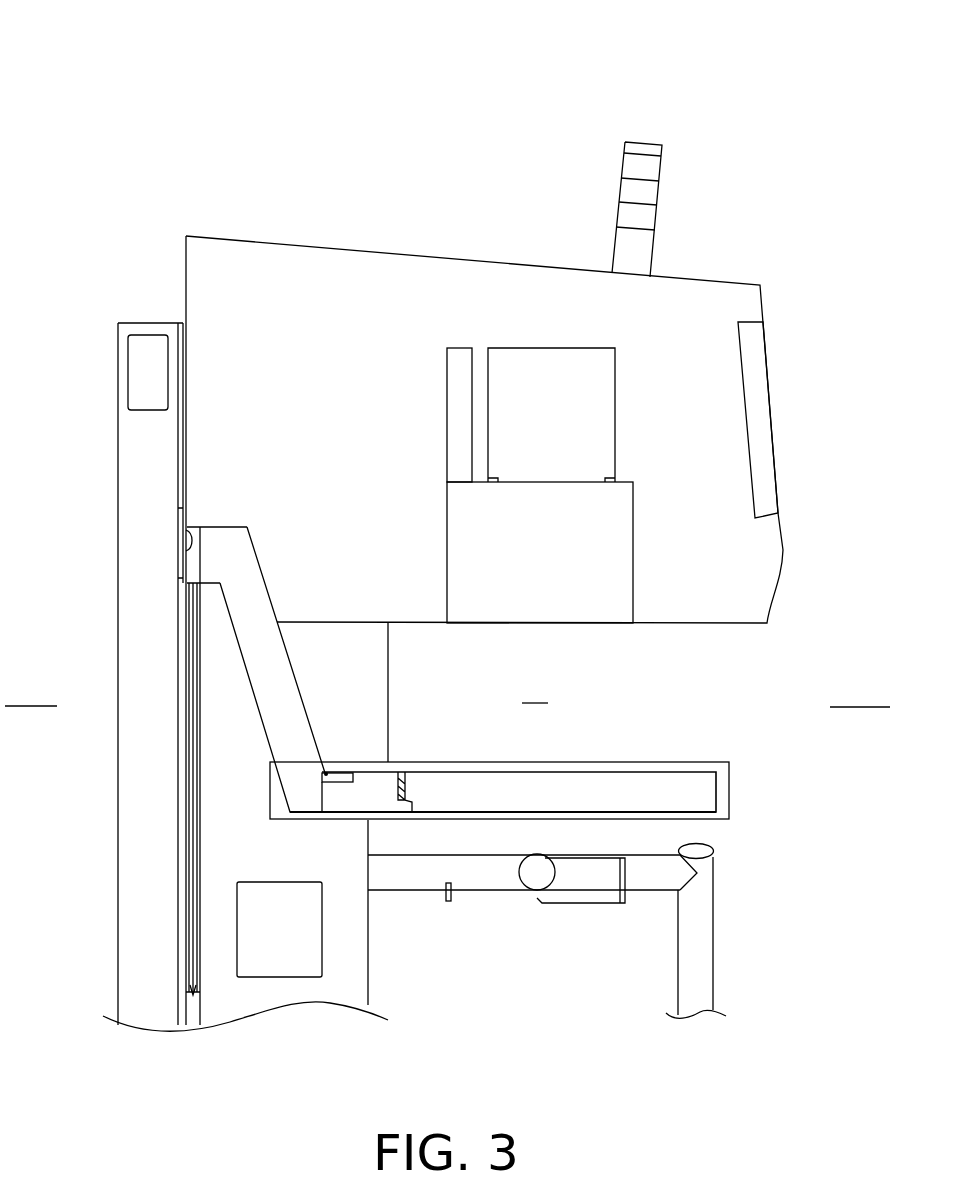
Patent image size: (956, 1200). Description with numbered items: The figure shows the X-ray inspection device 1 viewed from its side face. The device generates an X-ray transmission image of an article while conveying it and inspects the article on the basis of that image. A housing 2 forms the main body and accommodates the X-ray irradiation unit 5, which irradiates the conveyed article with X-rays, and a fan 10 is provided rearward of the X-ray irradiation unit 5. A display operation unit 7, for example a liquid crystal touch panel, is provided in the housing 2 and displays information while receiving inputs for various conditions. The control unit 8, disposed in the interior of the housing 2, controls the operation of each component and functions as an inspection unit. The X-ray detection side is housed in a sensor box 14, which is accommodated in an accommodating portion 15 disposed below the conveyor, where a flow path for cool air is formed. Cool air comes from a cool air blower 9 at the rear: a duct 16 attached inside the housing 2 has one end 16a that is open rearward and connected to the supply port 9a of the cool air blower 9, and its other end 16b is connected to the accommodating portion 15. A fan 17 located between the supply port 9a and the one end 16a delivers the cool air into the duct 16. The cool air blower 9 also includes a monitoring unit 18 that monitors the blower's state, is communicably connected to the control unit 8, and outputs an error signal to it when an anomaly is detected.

The X-ray inspection device 1 is at (523, 133).
The housing 2 is at (268, 237).
The X-ray irradiation unit 5 is at (618, 366).
The display operation unit 7 is at (762, 405).
The control unit 8 is at (275, 957).
The cool air blower 9 is at (116, 320).
The supply port 9a is at (188, 536).
The fan 10 is at (455, 410).
The sensor box 14 is at (713, 814).
The accommodating portion 15 is at (660, 762).
The duct 16 is at (247, 605).
The one end of the duct 16a is at (200, 527).
The other end of the duct 16b is at (317, 806).
The fan 17 is at (183, 560).
The monitoring unit 18 is at (146, 352).